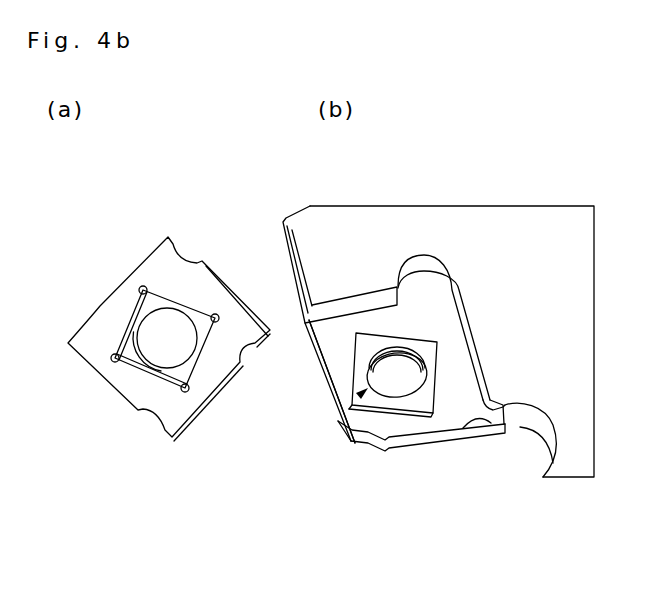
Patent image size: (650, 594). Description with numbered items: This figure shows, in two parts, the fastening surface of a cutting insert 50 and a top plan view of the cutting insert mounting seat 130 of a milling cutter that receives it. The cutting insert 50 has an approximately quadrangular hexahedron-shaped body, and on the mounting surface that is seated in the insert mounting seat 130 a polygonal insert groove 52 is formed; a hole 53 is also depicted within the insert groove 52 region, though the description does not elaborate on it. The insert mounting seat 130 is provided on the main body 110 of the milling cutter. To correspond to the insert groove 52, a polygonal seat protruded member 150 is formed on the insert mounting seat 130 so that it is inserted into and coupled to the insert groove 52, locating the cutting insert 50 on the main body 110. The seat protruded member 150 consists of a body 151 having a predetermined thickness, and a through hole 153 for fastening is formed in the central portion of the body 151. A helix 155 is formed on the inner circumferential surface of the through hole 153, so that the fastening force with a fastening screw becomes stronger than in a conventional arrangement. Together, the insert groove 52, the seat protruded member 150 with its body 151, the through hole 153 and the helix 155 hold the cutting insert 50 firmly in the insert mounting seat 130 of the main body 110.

The cutting insert 50 is at (145, 307).
The insert groove 52 is at (142, 295).
The insert through hole 53 is at (155, 338).
The main body 110 is at (369, 258).
The cutting insert mounting seat 130 is at (338, 368).
The seat protruded member 150 is at (372, 444).
The body 151 is at (383, 398).
The through hole 153 is at (397, 378).
The helix 155 is at (418, 383).